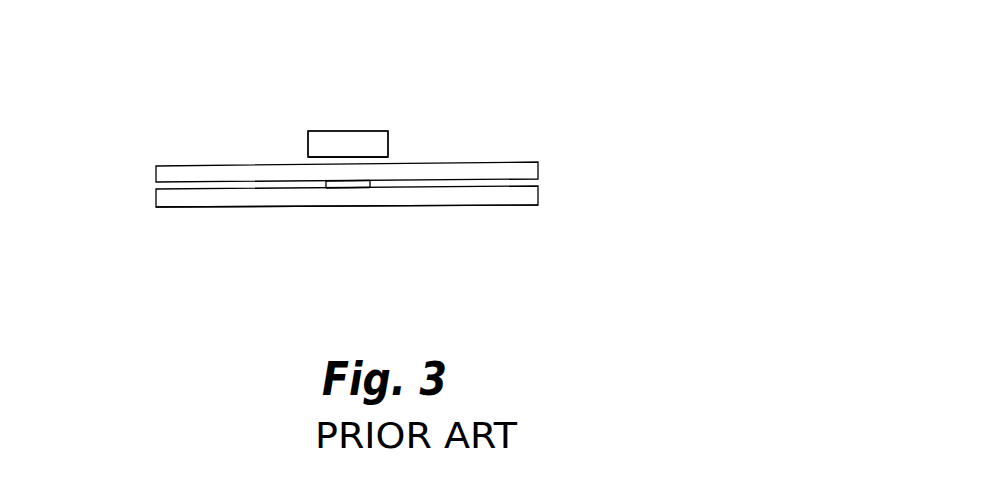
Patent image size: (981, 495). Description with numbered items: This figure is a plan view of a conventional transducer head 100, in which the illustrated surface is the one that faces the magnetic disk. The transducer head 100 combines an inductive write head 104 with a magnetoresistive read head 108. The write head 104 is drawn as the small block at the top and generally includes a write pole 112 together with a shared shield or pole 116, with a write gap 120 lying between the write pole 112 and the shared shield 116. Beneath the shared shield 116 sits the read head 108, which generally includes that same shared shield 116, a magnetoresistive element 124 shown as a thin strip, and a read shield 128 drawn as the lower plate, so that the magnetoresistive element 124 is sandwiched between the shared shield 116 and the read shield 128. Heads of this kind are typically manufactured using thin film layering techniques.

The transducer head 100 is at (398, 66).
The write head 104 is at (319, 119).
The read head 108 is at (313, 217).
The write pole 112 is at (375, 145).
The shared shield or pole 116 is at (527, 173).
The write gap 120 is at (307, 157).
The magnetoresistive element 124 is at (348, 186).
The read shield 128 is at (177, 198).